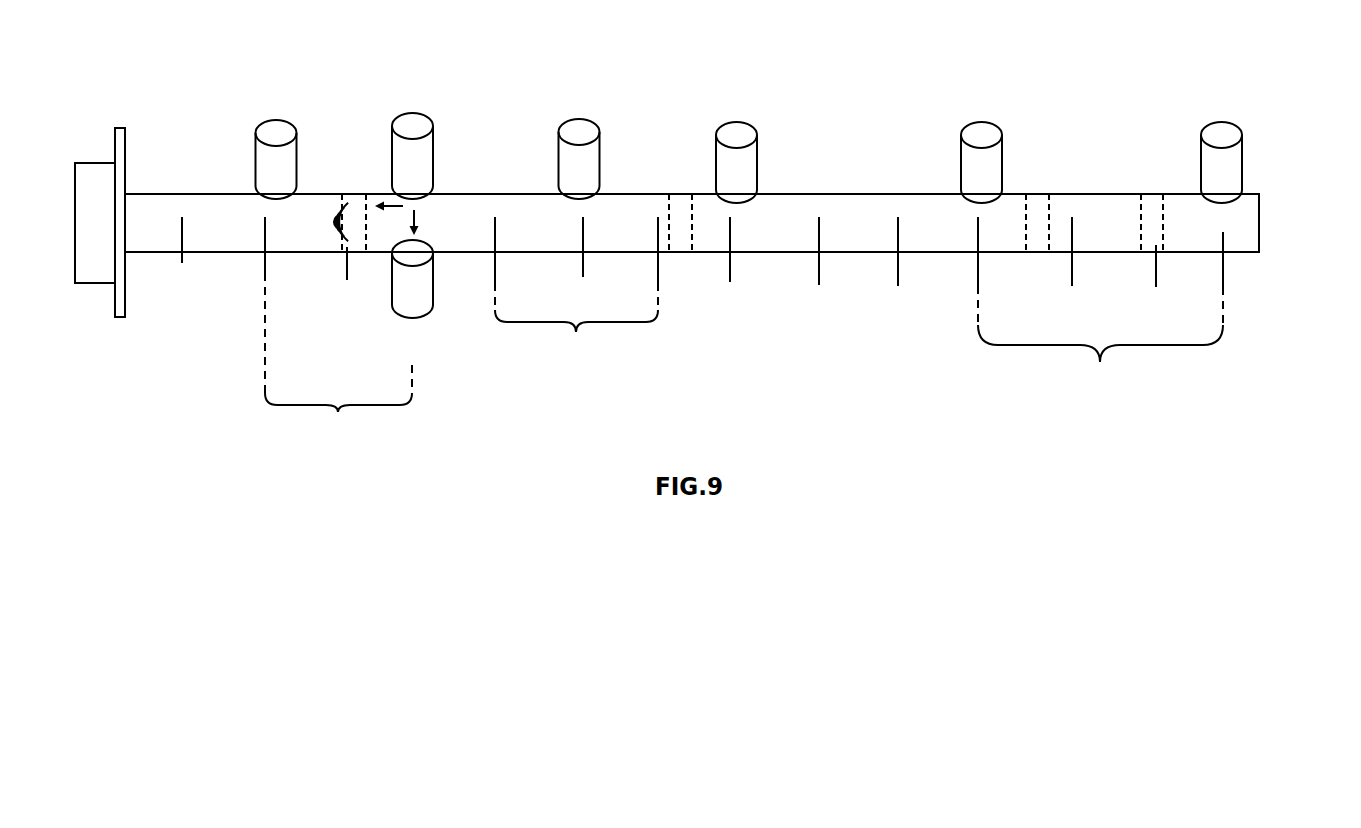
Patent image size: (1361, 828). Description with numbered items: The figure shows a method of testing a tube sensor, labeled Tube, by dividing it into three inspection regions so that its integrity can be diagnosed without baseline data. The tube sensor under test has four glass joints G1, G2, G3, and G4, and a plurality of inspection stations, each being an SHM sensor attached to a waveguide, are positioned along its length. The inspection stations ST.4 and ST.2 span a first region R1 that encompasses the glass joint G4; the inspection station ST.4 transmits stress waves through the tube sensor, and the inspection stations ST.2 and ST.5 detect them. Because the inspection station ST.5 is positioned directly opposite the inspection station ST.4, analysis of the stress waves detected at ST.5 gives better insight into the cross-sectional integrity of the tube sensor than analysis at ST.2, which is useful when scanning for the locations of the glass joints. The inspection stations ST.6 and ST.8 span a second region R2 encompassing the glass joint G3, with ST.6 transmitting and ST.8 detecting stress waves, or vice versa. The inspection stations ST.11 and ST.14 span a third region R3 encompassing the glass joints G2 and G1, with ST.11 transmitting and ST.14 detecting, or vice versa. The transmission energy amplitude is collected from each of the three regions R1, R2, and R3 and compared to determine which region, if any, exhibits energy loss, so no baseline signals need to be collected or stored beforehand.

The inspection station ST.2 is at (100, 85).
The inspection station ST.4 is at (303, 43).
The inspection station ST.5 is at (232, 327).
The inspection station ST.6 is at (470, 48).
The inspection station ST.8 is at (627, 48).
The inspection station ST.11 is at (870, 50).
The inspection station ST.14 is at (1112, 50).
The glass joint G1 is at (1152, 199).
The glass joint G2 is at (1039, 199).
The glass joint G3 is at (680, 199).
The glass joint G4 is at (350, 199).
The inspection region R1 is at (338, 359).
The inspection region R2 is at (576, 325).
The inspection region R3 is at (1100, 340).
The tube sensor Tube is at (701, 222).